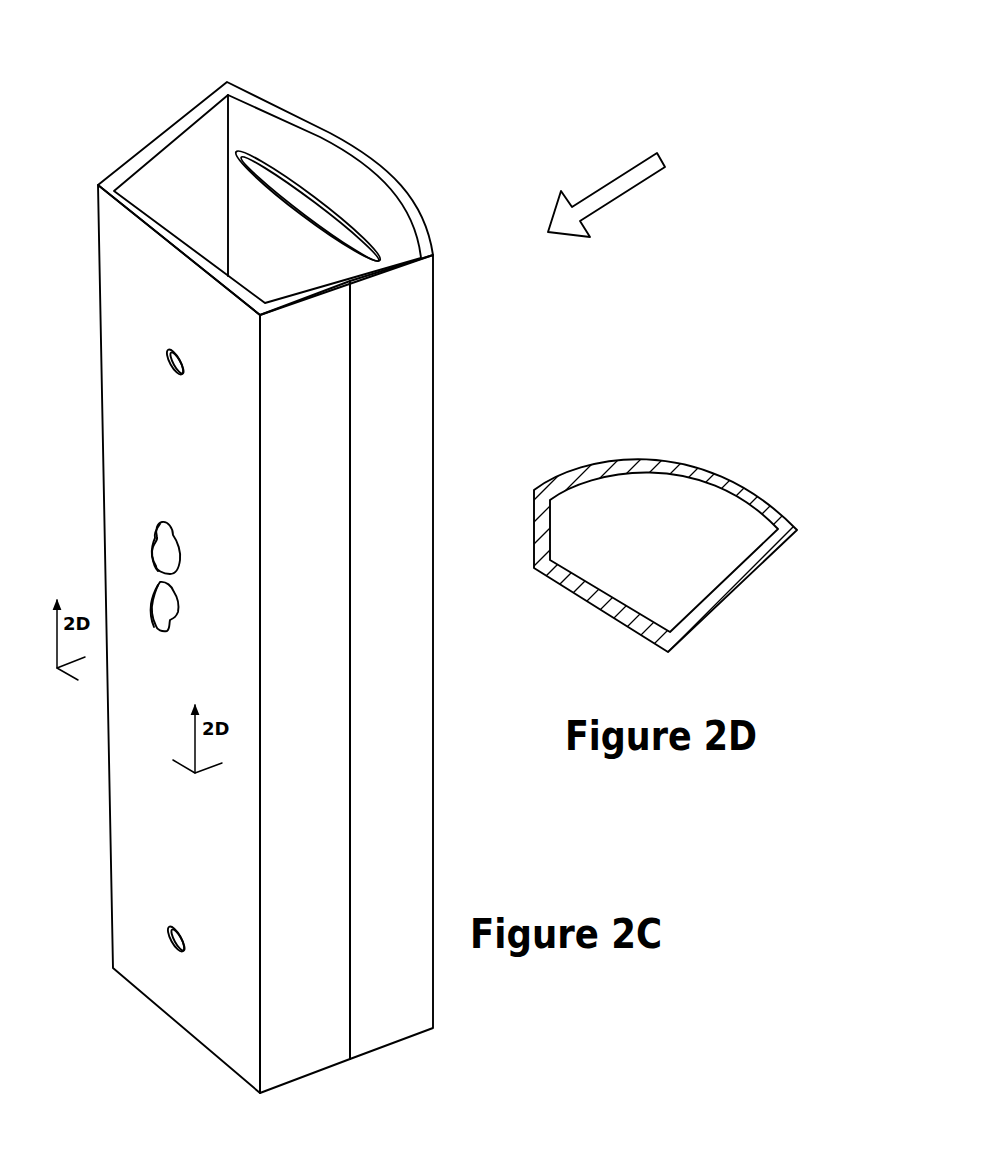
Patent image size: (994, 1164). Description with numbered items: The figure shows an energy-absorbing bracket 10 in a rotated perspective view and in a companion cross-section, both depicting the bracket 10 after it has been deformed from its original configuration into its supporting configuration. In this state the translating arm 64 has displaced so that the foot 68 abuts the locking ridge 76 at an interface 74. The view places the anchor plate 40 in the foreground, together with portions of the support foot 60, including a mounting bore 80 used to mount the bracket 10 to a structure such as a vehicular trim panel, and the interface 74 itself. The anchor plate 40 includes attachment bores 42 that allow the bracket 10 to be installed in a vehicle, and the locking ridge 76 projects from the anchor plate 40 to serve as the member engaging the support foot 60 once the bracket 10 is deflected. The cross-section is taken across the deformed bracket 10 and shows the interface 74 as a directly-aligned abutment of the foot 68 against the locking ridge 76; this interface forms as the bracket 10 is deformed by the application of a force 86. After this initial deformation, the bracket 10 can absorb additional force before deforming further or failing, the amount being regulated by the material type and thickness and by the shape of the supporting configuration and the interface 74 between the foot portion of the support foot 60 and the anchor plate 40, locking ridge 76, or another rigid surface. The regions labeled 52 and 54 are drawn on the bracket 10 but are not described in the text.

In FIG. 2C, the energy-absorbing bracket 10 is at (292, 573).
In FIG. 2D, the energy-absorbing bracket 10 is at (642, 527).
In FIG. 2C, the anchor plate 40 is at (120, 488).
In FIG. 2D, the anchor plate 40 is at (667, 657).
In FIG. 2C, the attachment bores 42 is at (157, 560).
In FIG. 2C, the inner surface of first wall 52 is at (171, 190).
In FIG. 2D, the inner surface of first wall 52 is at (806, 538).
In FIG. 2C, the corner region 54 is at (248, 63).
In FIG. 2D, the corner region 54 is at (818, 513).
In FIG. 2C, the support foot 60 is at (265, 168).
In FIG. 2D, the support foot 60 is at (740, 392).
In FIG. 2C, the translating arm 64 is at (288, 243).
In FIG. 2D, the translating arm 64 is at (542, 438).
In FIG. 2C, the foot 68 is at (398, 976).
In FIG. 2D, the foot 68 is at (540, 498).
In FIG. 2C, the interface 74 is at (349, 1060).
In FIG. 2D, the interface 74 is at (550, 533).
In FIG. 2C, the locking ridge 76 is at (278, 1005).
In FIG. 2D, the locking ridge 76 is at (535, 550).
In FIG. 2C, the mounting bore 80 is at (338, 208).
In FIG. 2C, the force 86 is at (648, 170).